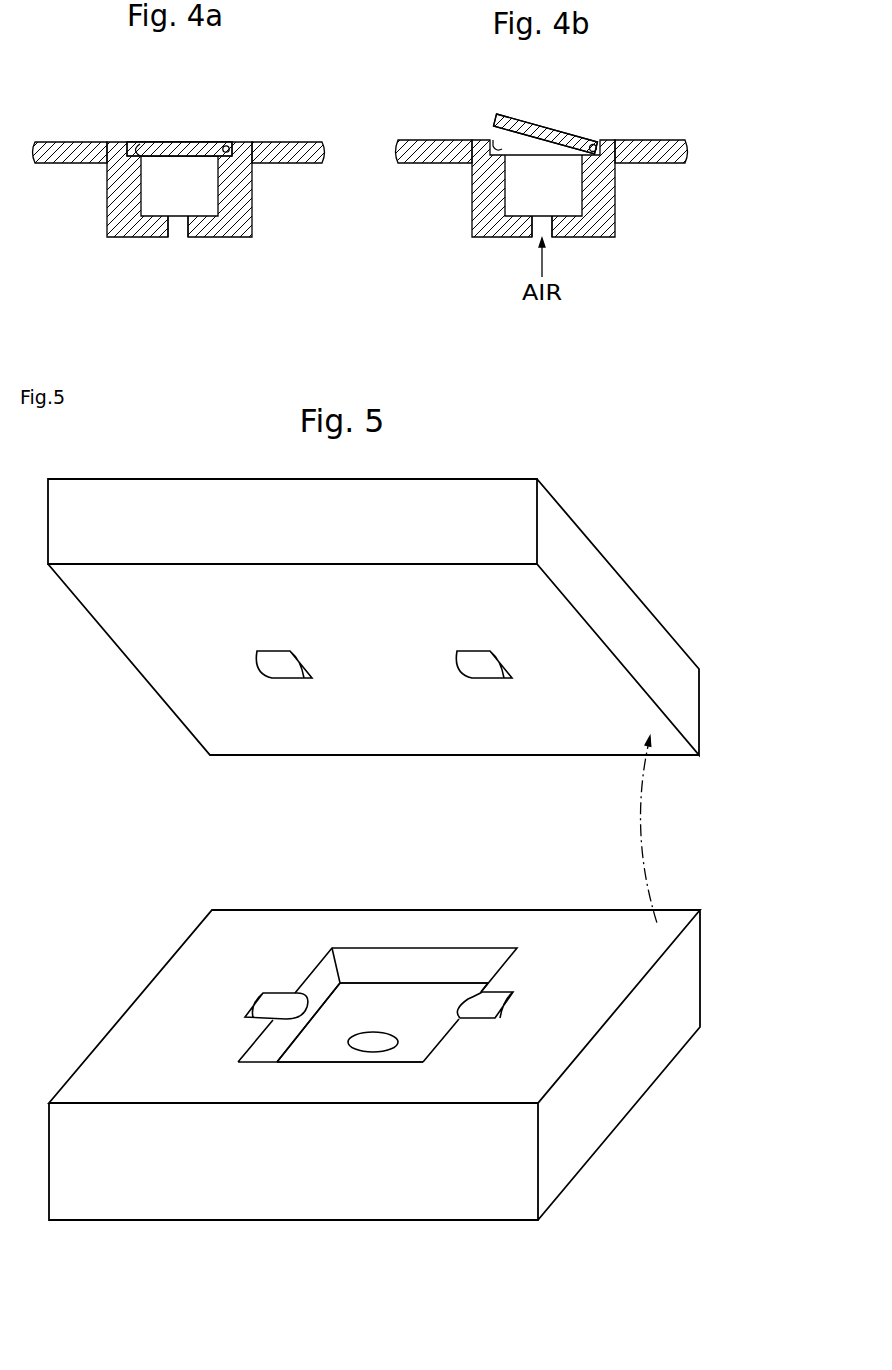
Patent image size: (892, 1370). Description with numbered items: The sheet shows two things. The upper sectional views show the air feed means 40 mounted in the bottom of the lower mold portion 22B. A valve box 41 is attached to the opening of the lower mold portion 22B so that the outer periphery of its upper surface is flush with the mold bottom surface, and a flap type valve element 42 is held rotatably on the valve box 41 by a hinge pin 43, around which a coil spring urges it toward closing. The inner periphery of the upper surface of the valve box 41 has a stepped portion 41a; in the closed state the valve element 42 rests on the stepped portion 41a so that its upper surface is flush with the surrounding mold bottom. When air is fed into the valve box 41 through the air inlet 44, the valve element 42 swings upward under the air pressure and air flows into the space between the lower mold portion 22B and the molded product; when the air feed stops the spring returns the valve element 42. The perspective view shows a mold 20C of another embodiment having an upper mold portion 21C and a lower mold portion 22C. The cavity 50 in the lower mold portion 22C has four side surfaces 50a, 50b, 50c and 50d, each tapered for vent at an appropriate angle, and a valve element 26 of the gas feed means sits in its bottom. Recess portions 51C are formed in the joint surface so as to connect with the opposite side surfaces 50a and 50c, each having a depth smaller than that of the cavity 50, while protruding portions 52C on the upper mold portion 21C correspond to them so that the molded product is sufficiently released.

In FIG. 4A, the lower mold portion 22B is at (59, 142).
In FIG. 4B, the lower mold portion 22B is at (421, 140).
In FIG. 4A, the air feed means 40 is at (140, 191).
In FIG. 4B, the air feed means 40 is at (503, 174).
In FIG. 4A, the valve box 41 is at (106, 228).
In FIG. 4B, the valve box 41 is at (470, 227).
In FIG. 4A, the stepped portion 41a is at (143, 157).
In FIG. 4B, the stepped portion 41a is at (499, 149).
In FIG. 4A, the valve element 42 is at (181, 142).
In FIG. 4B, the valve element 42 is at (550, 128).
In FIG. 4A, the hinge pin 43 is at (226, 145).
In FIG. 4B, the hinge pin 43 is at (592, 143).
In FIG. 4A, the air inlet 44 is at (177, 229).
In FIG. 4B, the air inlet 44 is at (540, 226).
In FIG. 5, the mold 20C is at (373, 594).
In FIG. 5, the upper mold portion 21C is at (594, 543).
In FIG. 5, the lower mold portion 22C is at (701, 942).
In FIG. 5, the cavity 50 is at (350, 986).
In FIG. 5, the side surface 50a is at (263, 1043).
In FIG. 5, the side surface 50b is at (427, 964).
In FIG. 5, the side surface 50c is at (436, 1040).
In FIG. 5, the side surface 50d is at (333, 1056).
In FIG. 5, the recess portion 51C is at (278, 1002).
In FIG. 5, the protruding portion 52C is at (290, 679).
In FIG. 5, the valve element 26 is at (378, 1040).